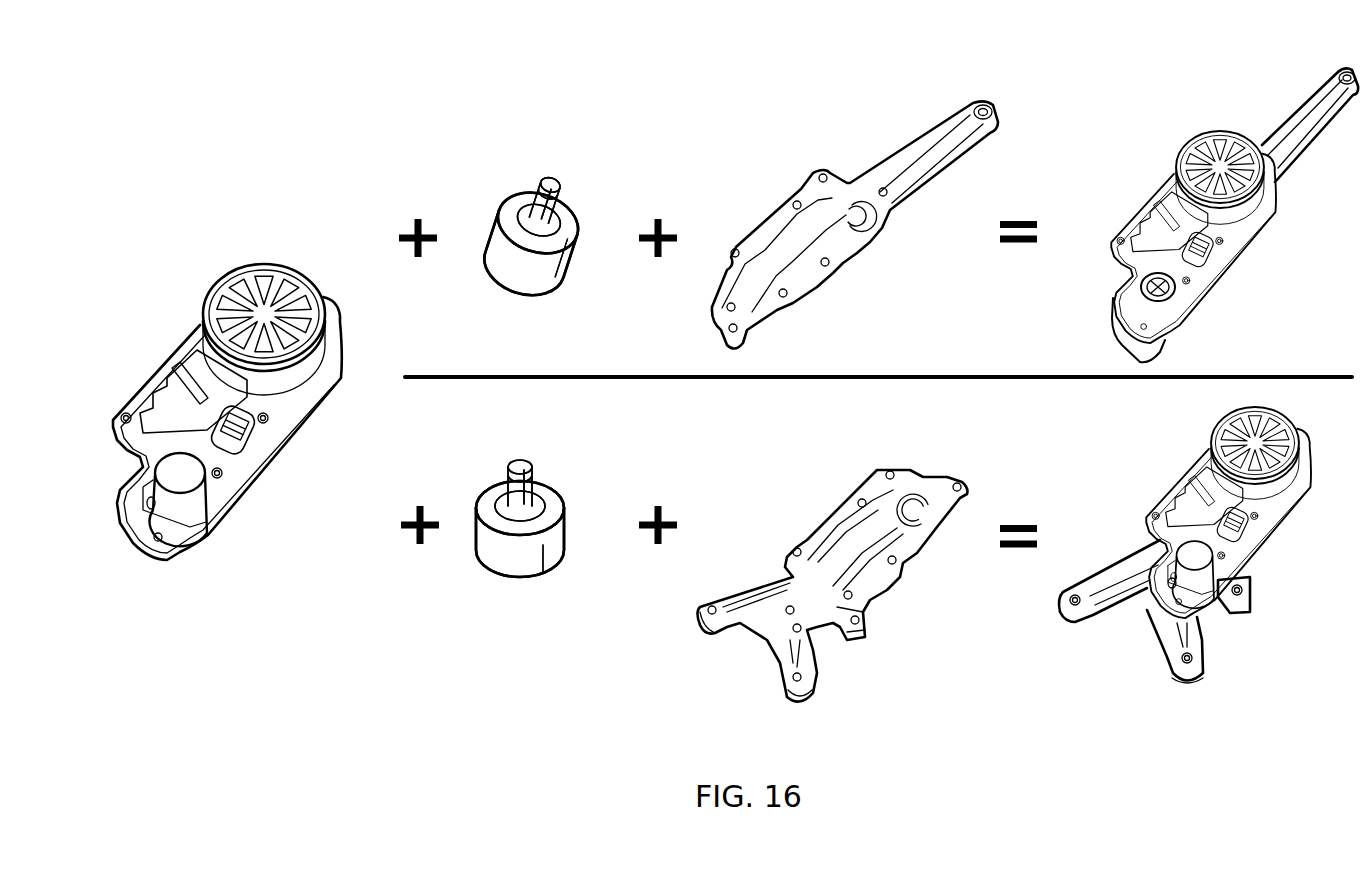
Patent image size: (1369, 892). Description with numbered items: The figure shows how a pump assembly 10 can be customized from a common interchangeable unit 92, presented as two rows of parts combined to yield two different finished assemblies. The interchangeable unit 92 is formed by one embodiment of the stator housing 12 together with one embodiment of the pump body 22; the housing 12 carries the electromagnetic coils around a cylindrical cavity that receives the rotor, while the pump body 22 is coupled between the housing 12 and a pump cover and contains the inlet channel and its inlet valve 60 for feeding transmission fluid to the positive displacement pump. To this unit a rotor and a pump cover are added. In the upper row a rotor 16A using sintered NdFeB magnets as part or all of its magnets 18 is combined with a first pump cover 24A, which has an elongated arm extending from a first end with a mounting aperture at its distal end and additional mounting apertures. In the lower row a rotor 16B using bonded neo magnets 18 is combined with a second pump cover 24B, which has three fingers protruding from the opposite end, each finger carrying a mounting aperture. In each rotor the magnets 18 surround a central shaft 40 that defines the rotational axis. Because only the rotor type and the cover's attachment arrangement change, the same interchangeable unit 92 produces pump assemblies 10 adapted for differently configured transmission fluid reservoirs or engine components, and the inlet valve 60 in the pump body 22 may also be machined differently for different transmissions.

The pump assembly 10 is at (1150, 135).
The housing 12 is at (168, 362).
The rotor 16A is at (496, 194).
The rotor 16B is at (470, 490).
The magnets 18 is at (496, 264).
The pump body 22 is at (138, 527).
The pump cover 24A is at (775, 186).
The pump cover 24B is at (798, 505).
The central shaft 40 is at (556, 190).
The inlet valve 60 is at (1164, 286).
The interchangeable unit 92 is at (221, 272).